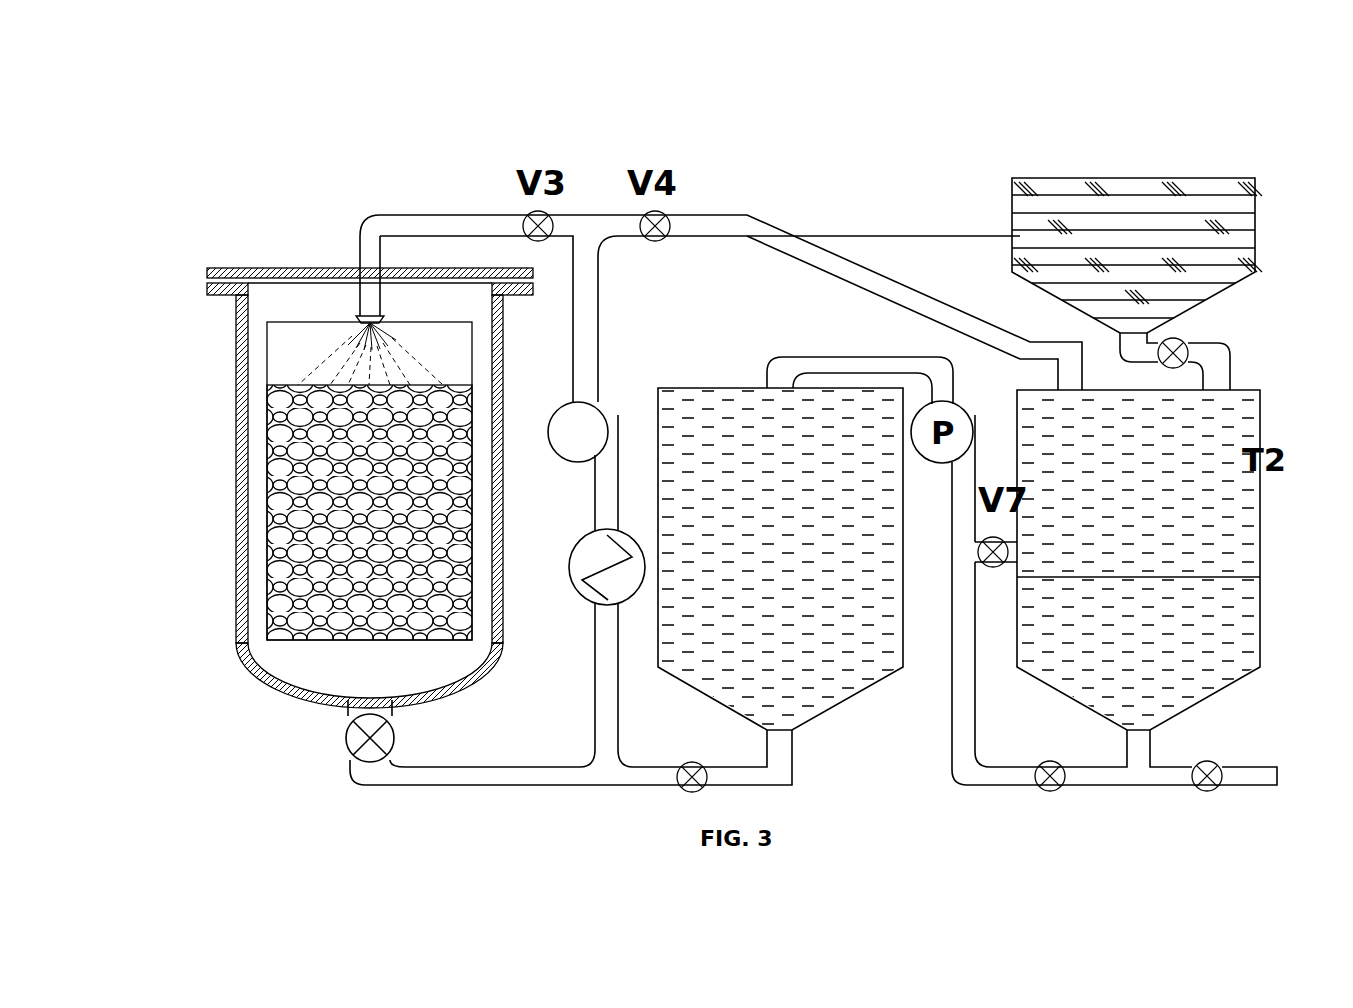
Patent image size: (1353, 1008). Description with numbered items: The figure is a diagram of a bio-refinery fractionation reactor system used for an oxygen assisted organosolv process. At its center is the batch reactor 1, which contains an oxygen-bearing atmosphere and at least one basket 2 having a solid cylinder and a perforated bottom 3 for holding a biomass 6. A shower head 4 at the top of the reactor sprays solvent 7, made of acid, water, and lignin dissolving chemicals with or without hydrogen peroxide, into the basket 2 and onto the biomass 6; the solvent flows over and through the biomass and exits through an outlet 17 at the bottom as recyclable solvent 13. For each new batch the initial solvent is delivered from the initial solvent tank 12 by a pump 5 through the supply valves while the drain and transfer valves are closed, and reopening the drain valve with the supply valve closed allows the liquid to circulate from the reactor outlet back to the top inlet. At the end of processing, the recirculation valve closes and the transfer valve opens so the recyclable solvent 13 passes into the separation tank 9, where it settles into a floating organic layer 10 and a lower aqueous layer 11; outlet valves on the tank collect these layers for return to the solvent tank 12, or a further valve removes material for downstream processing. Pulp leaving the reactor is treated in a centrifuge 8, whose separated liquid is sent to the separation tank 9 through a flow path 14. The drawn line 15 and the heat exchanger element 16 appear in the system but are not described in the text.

The reactor 1 is at (222, 268).
The basket 2 is at (238, 622).
The perforated bottom 3 is at (316, 641).
The shower head 4 is at (357, 315).
The pump 5 is at (580, 422).
The biomass 6 is at (360, 478).
The solvent 7 is at (307, 360).
The centrifuge 8 is at (1010, 212).
The separation tank 9 is at (1153, 388).
The organic layer 10 is at (1205, 533).
The aqueous layer 11 is at (1248, 617).
The initial solvent tank 12 is at (743, 388).
The recyclable solvent 13 is at (413, 665).
The flow path 14 is at (1228, 350).
The pump discharge line 15 is at (952, 653).
The heat exchanger 16 is at (590, 565).
The outlet 17 is at (395, 708).